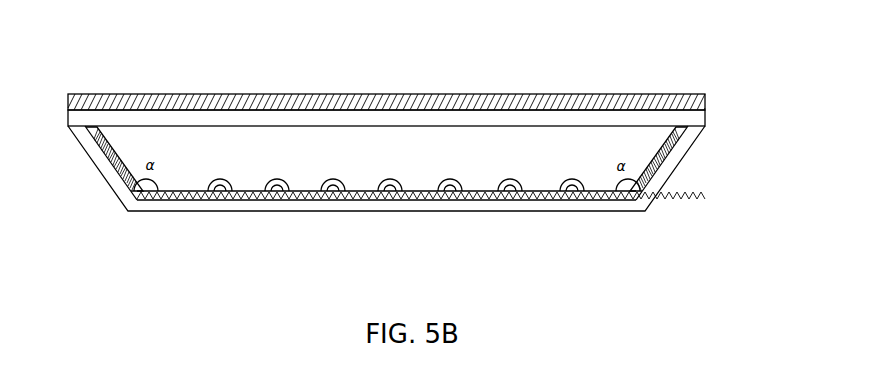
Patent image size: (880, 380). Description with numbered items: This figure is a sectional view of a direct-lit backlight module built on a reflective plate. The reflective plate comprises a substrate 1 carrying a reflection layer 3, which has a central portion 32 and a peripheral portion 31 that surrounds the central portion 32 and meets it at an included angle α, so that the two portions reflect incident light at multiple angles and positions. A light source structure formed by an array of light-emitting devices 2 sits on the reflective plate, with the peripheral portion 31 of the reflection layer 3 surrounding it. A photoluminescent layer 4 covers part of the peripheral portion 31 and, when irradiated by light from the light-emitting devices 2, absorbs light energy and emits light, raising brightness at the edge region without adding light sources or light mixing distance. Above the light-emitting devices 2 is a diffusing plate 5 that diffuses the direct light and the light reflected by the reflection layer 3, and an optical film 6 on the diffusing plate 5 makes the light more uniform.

The substrate 1 is at (601, 203).
The light-emitting device 2 is at (230, 182).
The reflection layer 3 is at (395, 112).
The peripheral portion 31 is at (115, 142).
The central portion 32 is at (178, 191).
The photoluminescent layer 4 is at (117, 178).
The diffusing plate 5 is at (705, 118).
The optical film 6 is at (705, 101).